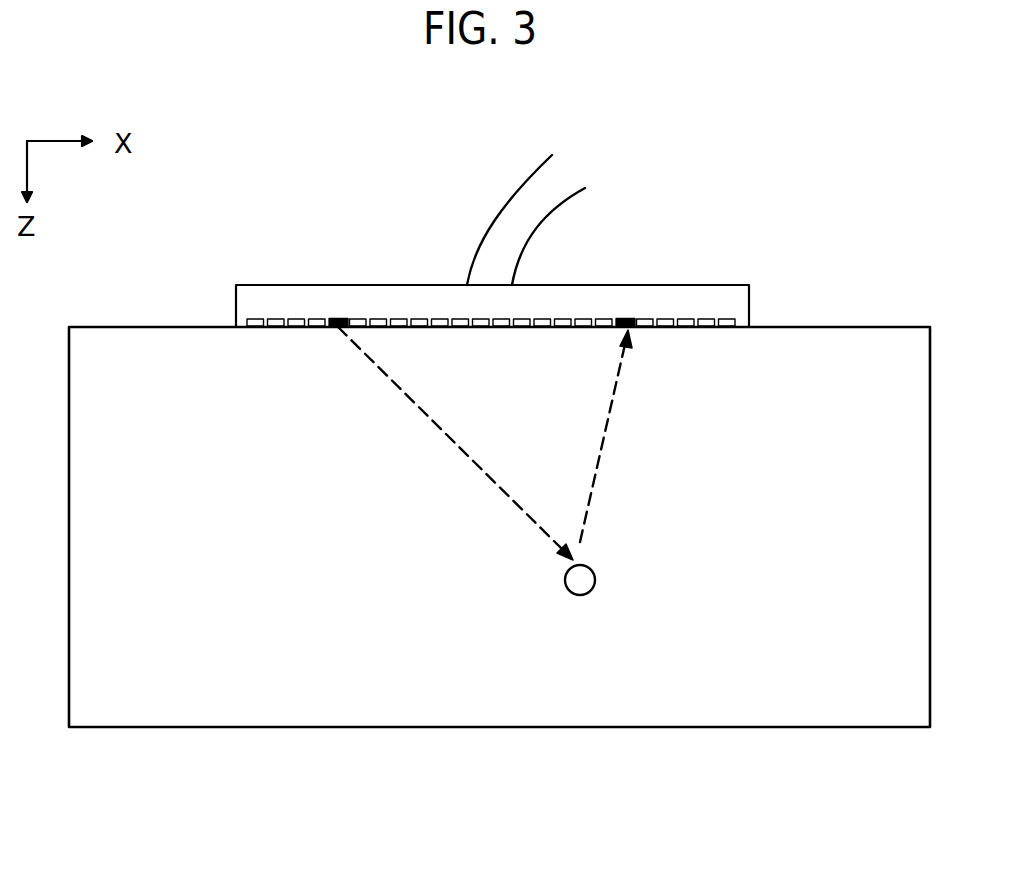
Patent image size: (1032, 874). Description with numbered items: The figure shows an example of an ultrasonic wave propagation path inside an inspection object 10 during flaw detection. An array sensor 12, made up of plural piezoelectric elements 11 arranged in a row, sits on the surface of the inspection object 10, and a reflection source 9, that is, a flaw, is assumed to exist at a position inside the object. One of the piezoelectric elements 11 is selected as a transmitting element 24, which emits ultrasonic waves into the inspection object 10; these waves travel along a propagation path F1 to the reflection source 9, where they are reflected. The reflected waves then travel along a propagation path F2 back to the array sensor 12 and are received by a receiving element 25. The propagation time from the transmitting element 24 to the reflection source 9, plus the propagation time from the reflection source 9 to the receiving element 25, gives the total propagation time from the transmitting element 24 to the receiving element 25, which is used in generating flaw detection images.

The reflection source 9 is at (594, 590).
The inspection object 10 is at (157, 325).
The piezoelectric elements 11 is at (276, 320).
The array sensor 12 is at (708, 285).
The transmitting element 24 is at (340, 318).
The receiving element 25 is at (627, 318).
The propagation path F1 is at (468, 457).
The propagation path F2 is at (600, 440).